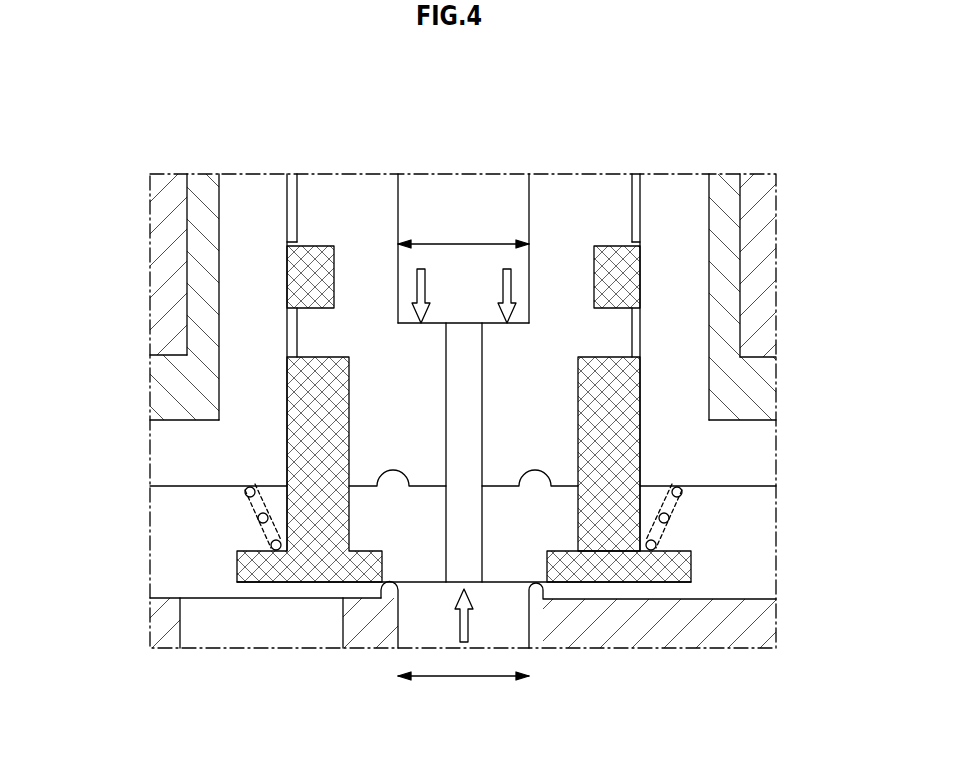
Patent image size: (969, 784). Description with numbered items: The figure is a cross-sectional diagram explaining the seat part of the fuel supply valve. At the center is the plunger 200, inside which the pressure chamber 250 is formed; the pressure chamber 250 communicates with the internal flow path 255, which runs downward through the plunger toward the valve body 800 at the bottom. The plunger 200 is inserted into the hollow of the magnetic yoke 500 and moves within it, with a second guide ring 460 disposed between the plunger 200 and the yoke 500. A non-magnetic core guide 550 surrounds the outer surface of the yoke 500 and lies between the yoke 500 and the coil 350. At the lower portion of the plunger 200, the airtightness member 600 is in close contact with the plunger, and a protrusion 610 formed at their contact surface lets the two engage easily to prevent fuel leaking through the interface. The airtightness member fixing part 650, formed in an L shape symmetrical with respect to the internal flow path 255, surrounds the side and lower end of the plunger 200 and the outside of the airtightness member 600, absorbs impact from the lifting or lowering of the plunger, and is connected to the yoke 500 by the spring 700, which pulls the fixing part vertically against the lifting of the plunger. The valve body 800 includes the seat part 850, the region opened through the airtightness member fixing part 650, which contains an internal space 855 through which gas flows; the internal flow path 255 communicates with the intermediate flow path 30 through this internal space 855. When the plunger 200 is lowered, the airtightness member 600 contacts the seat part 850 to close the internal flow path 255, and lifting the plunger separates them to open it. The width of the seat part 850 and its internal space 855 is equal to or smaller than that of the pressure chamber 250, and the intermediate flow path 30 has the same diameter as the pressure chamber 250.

The plunger 200 is at (577, 193).
The pressure chamber 250 is at (458, 205).
The coil 350 is at (165, 252).
The second guide ring 460 is at (297, 287).
The yoke 500 is at (683, 270).
The core guide 550 is at (723, 210).
The internal flow path 255 is at (463, 425).
The protrusion 610 is at (387, 476).
The spring 700 is at (670, 514).
The valve body 800 is at (172, 543).
The internal space 855 is at (425, 594).
The seat part 850 is at (438, 600).
The airtightness member 600 is at (552, 520).
The airtightness member fixing part 650 is at (648, 570).
The intermediate flow path 30 is at (510, 633).